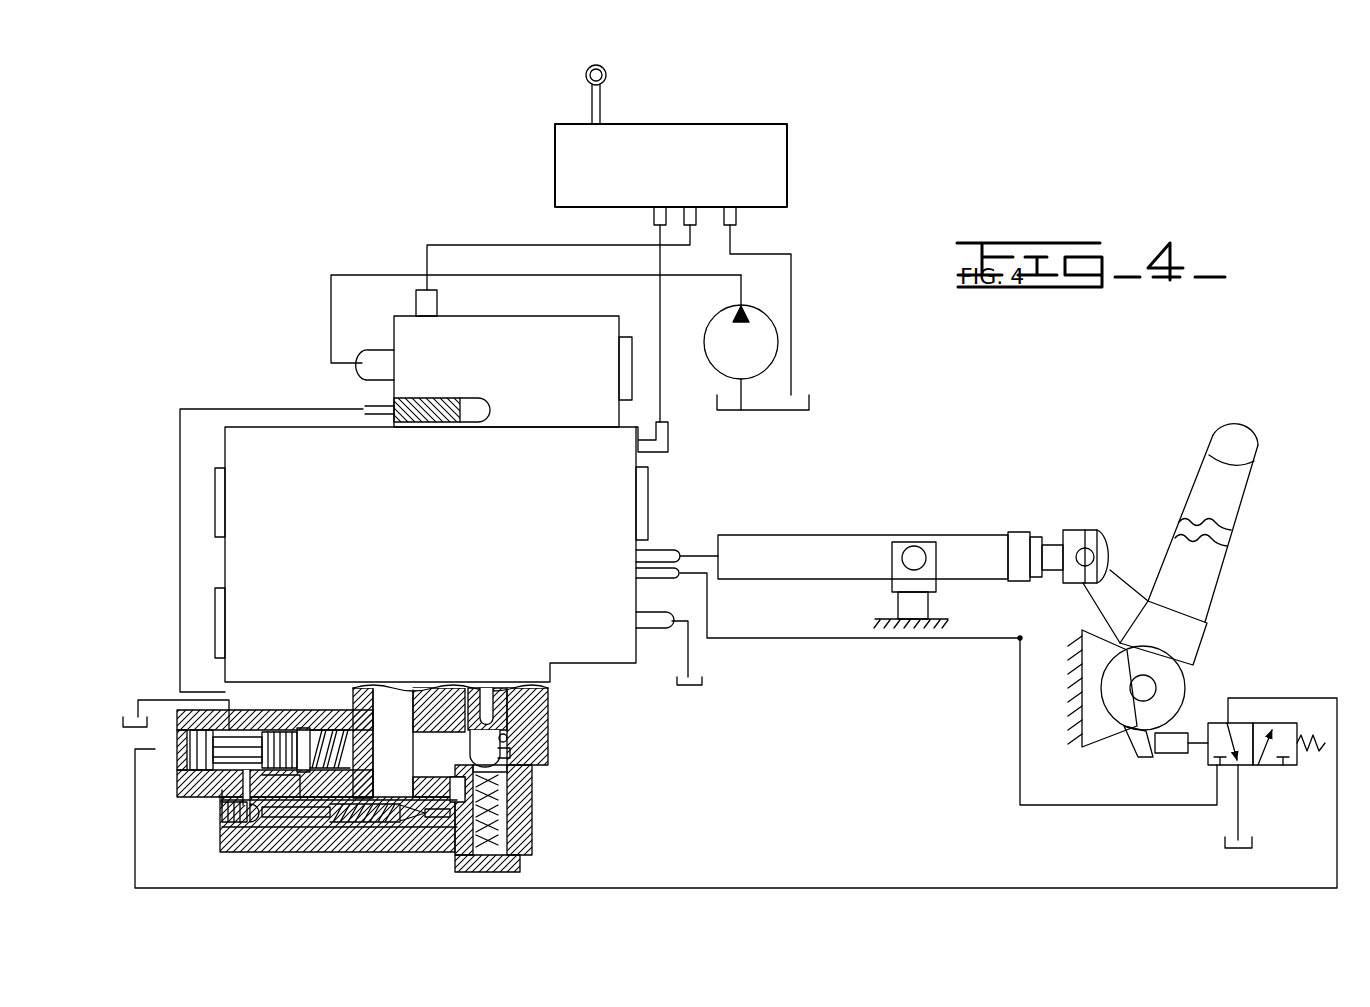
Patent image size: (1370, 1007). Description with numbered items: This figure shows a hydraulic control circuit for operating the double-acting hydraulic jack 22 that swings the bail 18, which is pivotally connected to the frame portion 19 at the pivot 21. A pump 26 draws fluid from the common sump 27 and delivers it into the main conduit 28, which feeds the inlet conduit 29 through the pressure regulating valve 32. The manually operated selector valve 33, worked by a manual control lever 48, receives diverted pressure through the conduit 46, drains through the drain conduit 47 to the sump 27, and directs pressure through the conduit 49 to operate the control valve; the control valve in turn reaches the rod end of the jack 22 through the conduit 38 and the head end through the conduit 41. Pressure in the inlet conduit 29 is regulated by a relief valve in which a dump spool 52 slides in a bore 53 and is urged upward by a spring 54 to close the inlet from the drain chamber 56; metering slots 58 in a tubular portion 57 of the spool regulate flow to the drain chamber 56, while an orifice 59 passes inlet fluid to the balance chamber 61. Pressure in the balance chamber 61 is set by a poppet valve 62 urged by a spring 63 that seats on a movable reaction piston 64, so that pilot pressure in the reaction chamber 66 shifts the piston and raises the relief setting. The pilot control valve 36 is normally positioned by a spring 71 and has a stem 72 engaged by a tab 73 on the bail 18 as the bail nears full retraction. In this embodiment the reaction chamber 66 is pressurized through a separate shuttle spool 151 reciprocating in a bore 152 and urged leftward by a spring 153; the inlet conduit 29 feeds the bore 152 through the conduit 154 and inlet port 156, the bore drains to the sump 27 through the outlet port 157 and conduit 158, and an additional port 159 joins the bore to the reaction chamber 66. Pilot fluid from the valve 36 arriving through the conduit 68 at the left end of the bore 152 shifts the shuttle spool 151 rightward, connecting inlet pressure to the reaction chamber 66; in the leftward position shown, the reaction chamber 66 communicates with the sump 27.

The bail 18 is at (1231, 510).
The frame portion 19 is at (1080, 688).
The pivotal connection 21 is at (1140, 675).
The double-acting hydraulic jack 22 is at (836, 535).
The pump 26 is at (757, 355).
The sump 27 is at (757, 411).
The main conduit 28 is at (355, 275).
The inlet conduit 29 is at (480, 402).
The pressure regulating valve 32 is at (540, 317).
The selector valve 33 is at (792, 121).
The pilot control valve 36 is at (1257, 770).
The conduit 38 is at (748, 638).
The conduit 41 is at (688, 550).
The conduit 46 is at (492, 245).
The drain conduit 47 is at (791, 255).
The manual control lever 48 is at (601, 107).
The conduit 49 is at (661, 297).
The dump spool 52 is at (512, 753).
The bore 53 is at (510, 776).
The spring 54 is at (520, 866).
The drain chamber 56 is at (385, 725).
The tubular portion 57 is at (508, 740).
The metering slots 58 is at (480, 720).
The orifice 59 is at (455, 785).
The balance chamber 61 is at (528, 810).
The poppet valve 62 is at (420, 826).
The spring 63 is at (352, 826).
The reaction piston 64 is at (275, 820).
The reaction chamber 66 is at (238, 826).
The conduit 68 is at (862, 888).
The spring 71 is at (1308, 735).
The stem 72 is at (1170, 754).
The tab 73 is at (1133, 758).
The shuttle spool 151 is at (275, 760).
The bore 152 is at (322, 728).
The spring 153 is at (358, 748).
The conduit 154 is at (212, 409).
The inlet port 156 is at (278, 730).
The outlet port 157 is at (235, 708).
The conduit 158 is at (150, 700).
The port 159 is at (220, 795).